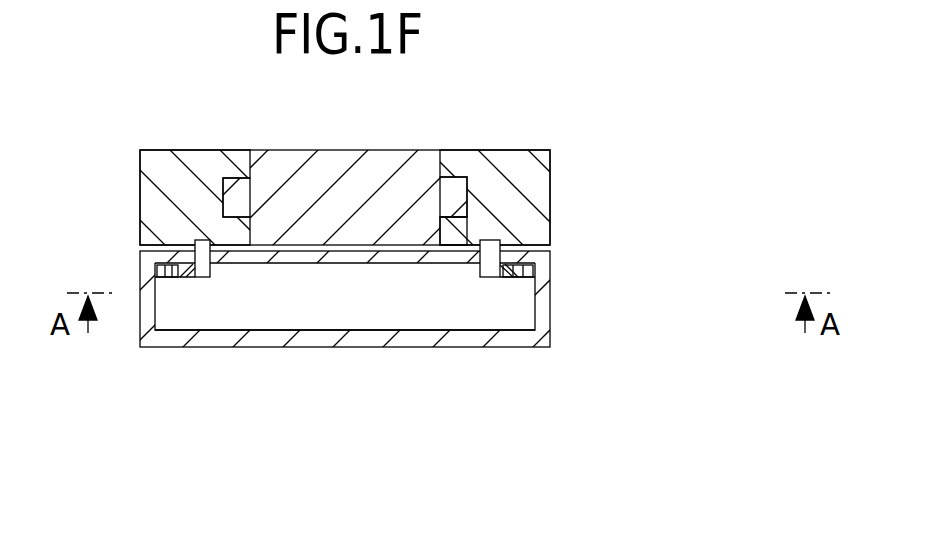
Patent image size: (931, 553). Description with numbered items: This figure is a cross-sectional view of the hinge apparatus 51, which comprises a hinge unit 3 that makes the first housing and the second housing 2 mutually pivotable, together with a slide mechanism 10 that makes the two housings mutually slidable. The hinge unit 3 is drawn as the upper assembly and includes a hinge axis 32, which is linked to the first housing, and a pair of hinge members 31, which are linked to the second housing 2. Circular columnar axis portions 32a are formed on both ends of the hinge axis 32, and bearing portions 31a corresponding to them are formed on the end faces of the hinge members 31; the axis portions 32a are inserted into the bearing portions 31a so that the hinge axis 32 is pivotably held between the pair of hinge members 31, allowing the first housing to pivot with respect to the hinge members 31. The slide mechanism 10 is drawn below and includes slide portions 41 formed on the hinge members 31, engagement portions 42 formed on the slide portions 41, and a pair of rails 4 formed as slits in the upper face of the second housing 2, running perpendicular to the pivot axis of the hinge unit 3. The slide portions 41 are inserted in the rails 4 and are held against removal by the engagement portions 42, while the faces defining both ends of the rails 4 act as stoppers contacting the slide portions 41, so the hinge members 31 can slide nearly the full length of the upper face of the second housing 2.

The second housing 2 is at (208, 347).
The hinge unit 3 is at (423, 196).
The rails 4 is at (386, 316).
The slide mechanism 10 is at (397, 323).
The hinge members 31 is at (385, 196).
The bearing portions 31a is at (463, 223).
The hinge axis 32 is at (397, 182).
The axis portions 32a is at (450, 190).
The slide portions 41 is at (513, 268).
The engagement portions 42 is at (502, 276).
The hinge apparatus 51 is at (437, 229).